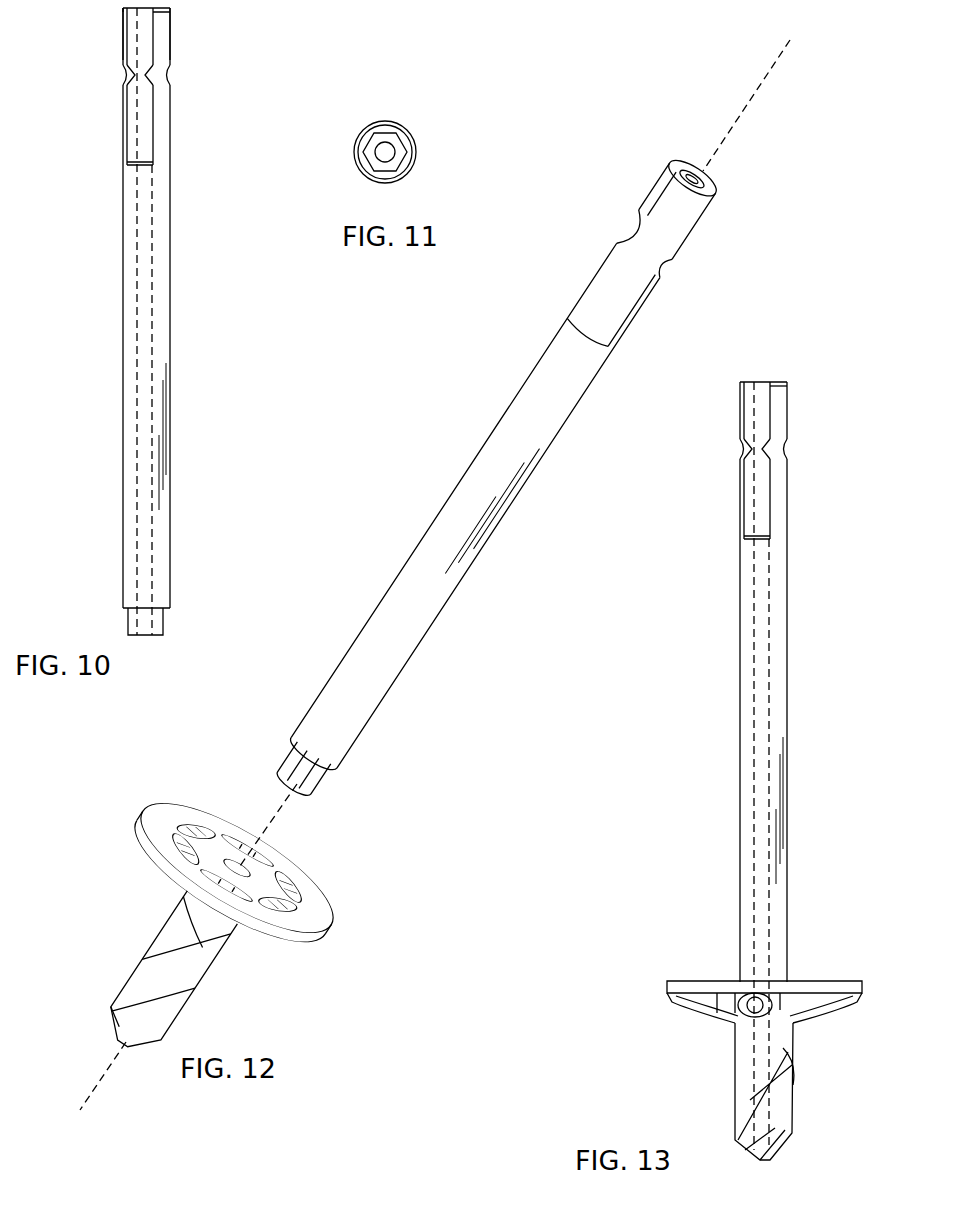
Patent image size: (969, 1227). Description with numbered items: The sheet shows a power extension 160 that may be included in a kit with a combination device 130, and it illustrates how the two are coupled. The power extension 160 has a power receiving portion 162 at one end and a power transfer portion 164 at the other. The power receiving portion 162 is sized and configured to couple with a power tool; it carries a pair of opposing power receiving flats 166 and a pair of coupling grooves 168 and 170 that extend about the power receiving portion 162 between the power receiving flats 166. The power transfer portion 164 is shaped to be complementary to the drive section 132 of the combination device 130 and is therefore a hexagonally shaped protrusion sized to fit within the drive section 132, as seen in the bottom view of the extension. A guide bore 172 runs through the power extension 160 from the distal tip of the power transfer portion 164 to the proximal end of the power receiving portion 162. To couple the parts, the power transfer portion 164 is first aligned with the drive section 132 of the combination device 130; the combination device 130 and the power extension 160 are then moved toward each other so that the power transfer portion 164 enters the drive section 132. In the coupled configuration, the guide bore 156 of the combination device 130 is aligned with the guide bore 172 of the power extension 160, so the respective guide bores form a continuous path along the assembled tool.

In FIG. 12, the combination device 130 is at (328, 933).
In FIG. 13, the combination device 130 is at (667, 985).
In FIG. 12, the drive section 132 is at (236, 867).
In FIG. 13, the guide bore 156 is at (793, 1045).
In FIG. 10, the power extension 160 is at (163, 321).
In FIG. 12, the power extension 160 is at (429, 628).
In FIG. 13, the power extension 160 is at (832, 766).
In FIG. 10, the power receiving portion 162 is at (170, 31).
In FIG. 10, the power transfer portion 164 is at (163, 628).
In FIG. 11, the power transfer portion 164 is at (410, 134).
In FIG. 12, the power transfer portion 164 is at (328, 793).
In FIG. 10, the power receiving flats 166 is at (153, 120).
In FIG. 10, the coupling groove 168 is at (170, 80).
In FIG. 10, the coupling groove 170 is at (123, 73).
In FIG. 10, the guide bore 172 is at (150, 358).
In FIG. 11, the guide bore 172 is at (364, 162).
In FIG. 13, the guide bore 172 is at (787, 902).